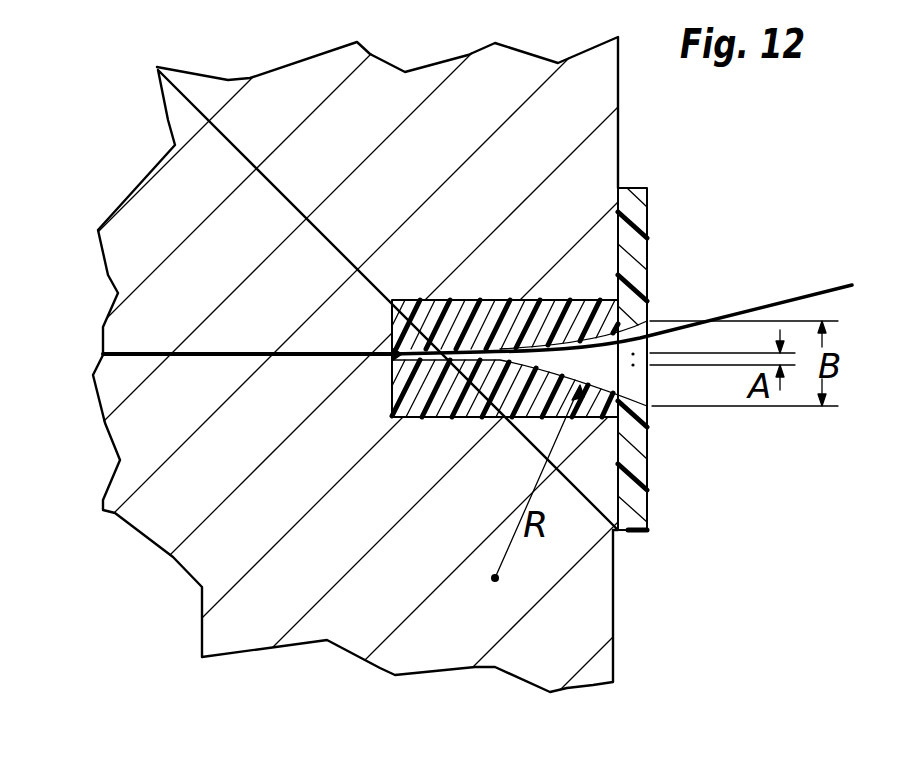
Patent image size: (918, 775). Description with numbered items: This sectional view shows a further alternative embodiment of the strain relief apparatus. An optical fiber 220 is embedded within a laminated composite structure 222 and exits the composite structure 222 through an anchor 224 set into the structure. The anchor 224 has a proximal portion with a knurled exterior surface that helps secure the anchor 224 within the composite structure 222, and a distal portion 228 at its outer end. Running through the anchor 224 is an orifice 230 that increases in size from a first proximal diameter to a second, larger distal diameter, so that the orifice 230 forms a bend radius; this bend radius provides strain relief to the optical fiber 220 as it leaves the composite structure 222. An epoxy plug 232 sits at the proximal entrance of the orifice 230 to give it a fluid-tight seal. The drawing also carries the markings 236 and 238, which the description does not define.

The slit / die body assembly 220 is at (160, 352).
The die body block 222 is at (593, 148).
The flange insert plate 224 is at (660, 240).
The shoulder step 228 is at (622, 535).
The extruded strip / film 230 is at (617, 370).
The slit entry 232 is at (390, 362).
The channel insert lip 236 is at (530, 372).
The lower flange foot 238 is at (634, 505).